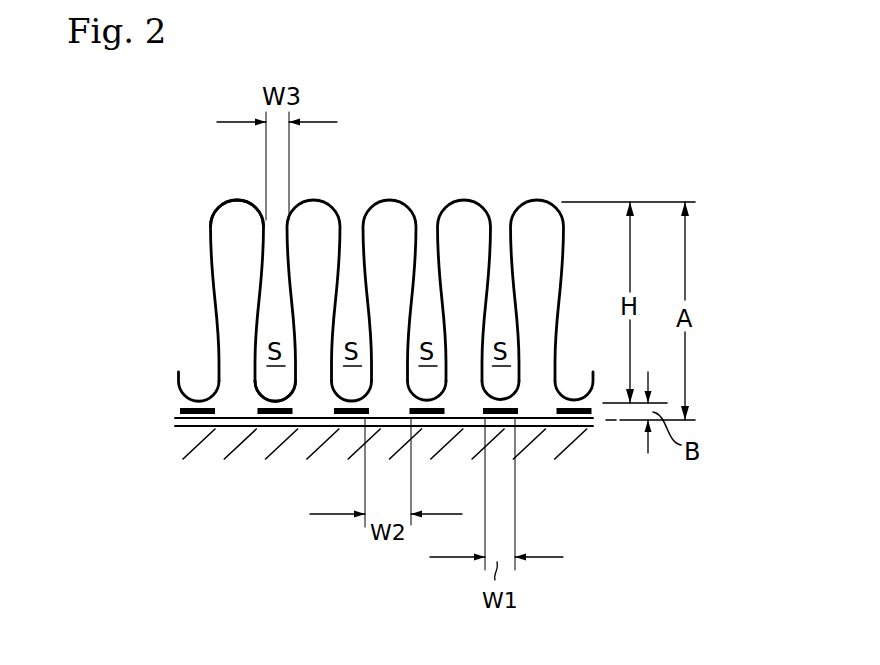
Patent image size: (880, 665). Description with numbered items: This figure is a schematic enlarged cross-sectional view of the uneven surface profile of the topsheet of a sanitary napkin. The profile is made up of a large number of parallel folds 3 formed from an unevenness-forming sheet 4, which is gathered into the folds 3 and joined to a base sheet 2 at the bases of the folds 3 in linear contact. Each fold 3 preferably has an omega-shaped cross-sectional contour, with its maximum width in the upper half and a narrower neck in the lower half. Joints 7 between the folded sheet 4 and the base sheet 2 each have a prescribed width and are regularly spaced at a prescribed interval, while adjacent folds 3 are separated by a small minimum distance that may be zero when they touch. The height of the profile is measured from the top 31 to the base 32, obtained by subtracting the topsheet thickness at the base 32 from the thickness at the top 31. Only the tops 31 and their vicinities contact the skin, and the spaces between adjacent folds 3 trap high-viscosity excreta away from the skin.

The base sheet 2 is at (237, 418).
The fold 3 is at (322, 198).
The unevenness-forming sheet 4 is at (211, 241).
The joint 7 is at (522, 406).
The top 31 is at (240, 202).
The base 32 is at (275, 402).